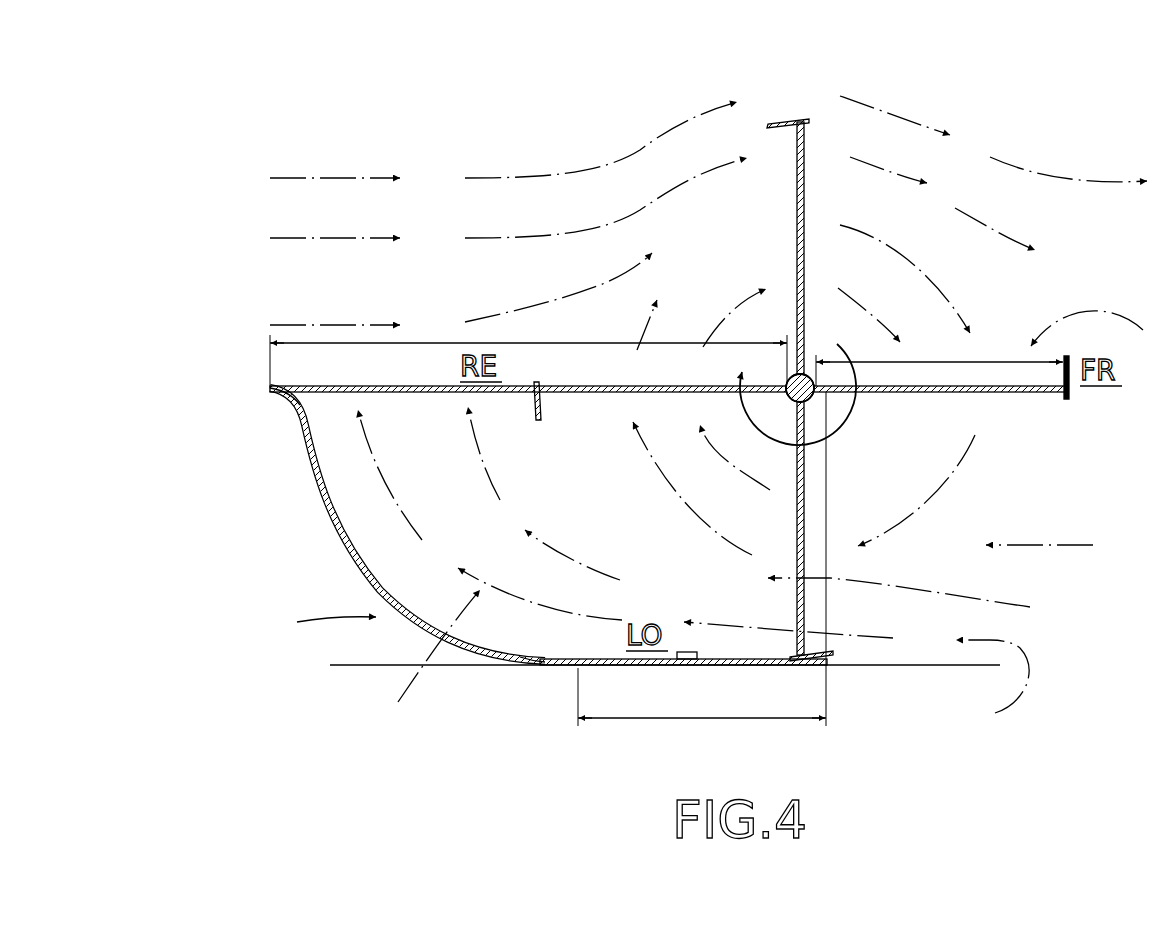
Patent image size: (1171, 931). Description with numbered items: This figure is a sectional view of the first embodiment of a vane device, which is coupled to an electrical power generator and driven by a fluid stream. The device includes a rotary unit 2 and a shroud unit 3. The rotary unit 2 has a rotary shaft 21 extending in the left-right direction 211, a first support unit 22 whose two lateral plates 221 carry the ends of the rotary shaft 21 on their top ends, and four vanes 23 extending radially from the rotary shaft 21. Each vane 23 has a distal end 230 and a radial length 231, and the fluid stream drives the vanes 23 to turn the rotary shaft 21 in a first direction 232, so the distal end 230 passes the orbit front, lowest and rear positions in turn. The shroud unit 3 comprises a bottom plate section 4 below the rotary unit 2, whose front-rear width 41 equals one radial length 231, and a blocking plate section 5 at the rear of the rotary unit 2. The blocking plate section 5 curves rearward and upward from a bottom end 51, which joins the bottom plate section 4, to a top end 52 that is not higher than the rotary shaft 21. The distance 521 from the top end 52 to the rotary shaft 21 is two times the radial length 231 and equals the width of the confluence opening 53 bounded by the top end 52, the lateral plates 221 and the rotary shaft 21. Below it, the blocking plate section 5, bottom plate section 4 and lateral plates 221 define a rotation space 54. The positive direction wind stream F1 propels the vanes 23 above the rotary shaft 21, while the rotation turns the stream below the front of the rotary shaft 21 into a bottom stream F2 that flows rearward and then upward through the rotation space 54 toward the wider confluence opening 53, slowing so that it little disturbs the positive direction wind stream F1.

The rotary unit 2 is at (798, 102).
The rotary shaft 21 is at (797, 374).
The left-right direction 211 is at (810, 375).
The first support unit 22 is at (832, 563).
The lateral plates 221 is at (812, 517).
The vanes 23 is at (803, 187).
The distal end 230 is at (1066, 399).
The radial length 231 is at (942, 362).
The first direction 232 is at (858, 401).
The shroud unit 3 is at (322, 629).
The bottom plate section 4 is at (640, 661).
The width 41 is at (700, 718).
The blocking plate section 5 is at (353, 547).
The bottom end 51 is at (540, 666).
The top end 52 is at (272, 388).
The distance 521 is at (547, 343).
The confluence opening 53 is at (380, 384).
The rotation space 54 is at (571, 460).
The positive direction wind stream F1 is at (345, 178).
The bottom stream F2 is at (418, 656).